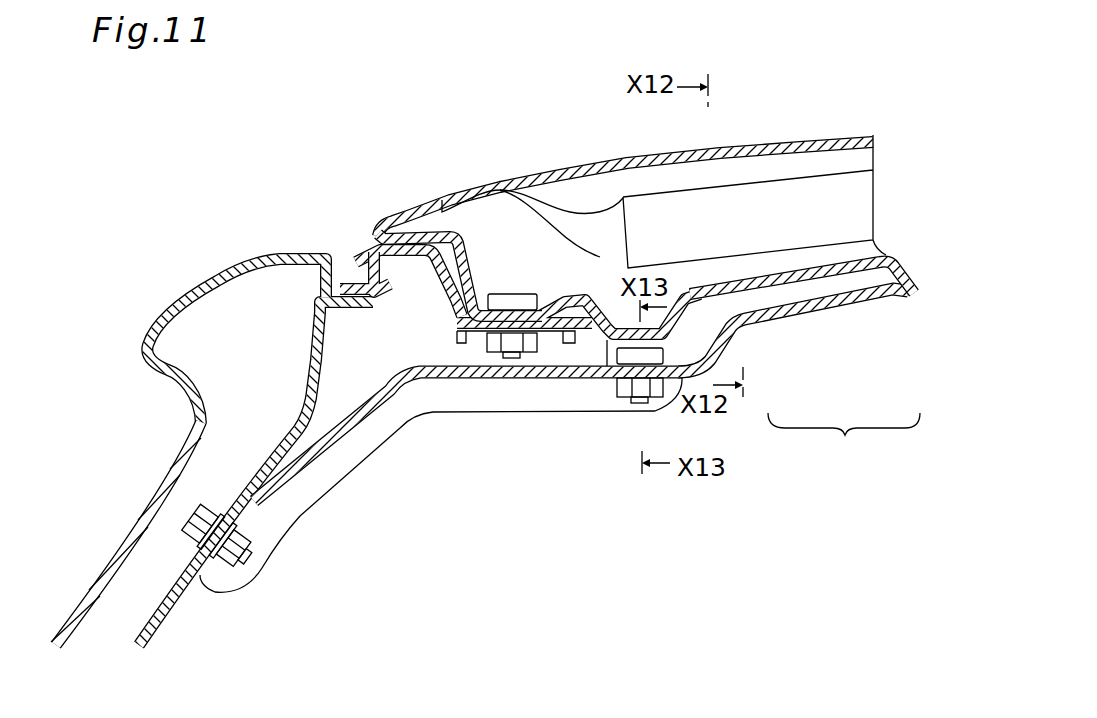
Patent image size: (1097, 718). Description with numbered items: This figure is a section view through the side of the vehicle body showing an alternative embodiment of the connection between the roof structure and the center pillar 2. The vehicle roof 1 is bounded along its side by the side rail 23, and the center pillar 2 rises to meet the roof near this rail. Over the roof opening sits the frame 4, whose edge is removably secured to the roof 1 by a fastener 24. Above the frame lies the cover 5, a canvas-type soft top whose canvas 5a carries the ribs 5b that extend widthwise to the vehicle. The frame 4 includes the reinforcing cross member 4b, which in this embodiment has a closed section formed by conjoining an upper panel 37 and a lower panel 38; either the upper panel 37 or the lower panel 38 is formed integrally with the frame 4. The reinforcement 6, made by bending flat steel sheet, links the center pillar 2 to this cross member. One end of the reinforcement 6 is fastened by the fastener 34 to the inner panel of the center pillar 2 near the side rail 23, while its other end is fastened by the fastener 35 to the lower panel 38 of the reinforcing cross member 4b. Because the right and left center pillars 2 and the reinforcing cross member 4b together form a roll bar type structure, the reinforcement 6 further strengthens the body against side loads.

The vehicle roof 1 is at (256, 427).
The side rail 23 is at (216, 274).
The center pillar 2 is at (139, 524).
The frame 4 is at (569, 298).
The reinforcing cross member 4b is at (844, 442).
The cover 5 is at (625, 181).
The canvas 5a is at (560, 170).
The ribs 5b is at (736, 188).
The reinforcement 6 is at (384, 424).
The fastener 24 is at (511, 293).
The fastener 34 is at (255, 560).
The fastener 35 is at (637, 391).
The upper panel 37 is at (787, 284).
The lower panel 38 is at (868, 300).